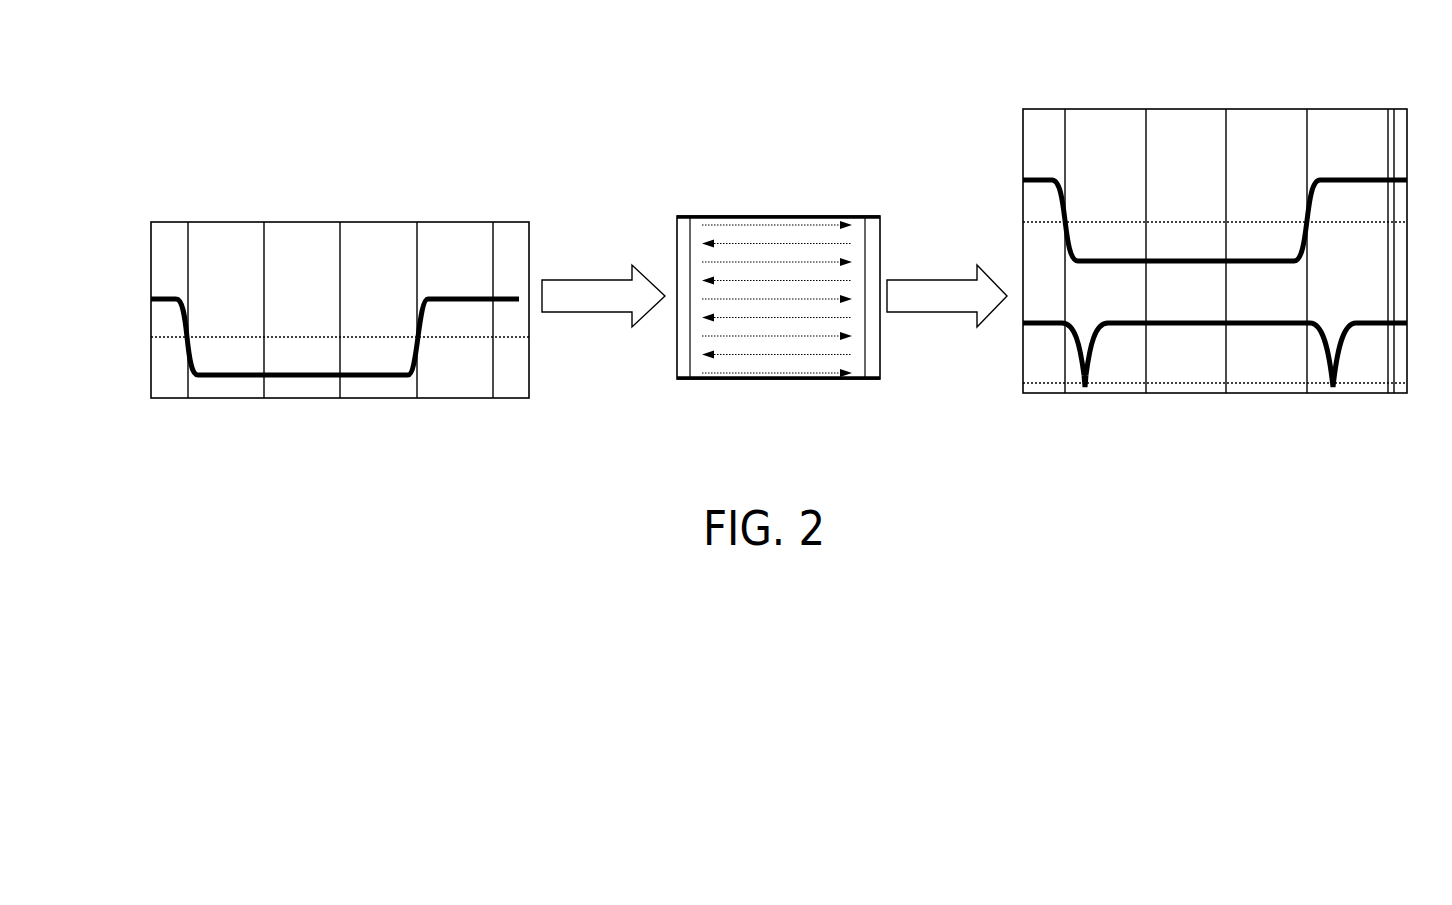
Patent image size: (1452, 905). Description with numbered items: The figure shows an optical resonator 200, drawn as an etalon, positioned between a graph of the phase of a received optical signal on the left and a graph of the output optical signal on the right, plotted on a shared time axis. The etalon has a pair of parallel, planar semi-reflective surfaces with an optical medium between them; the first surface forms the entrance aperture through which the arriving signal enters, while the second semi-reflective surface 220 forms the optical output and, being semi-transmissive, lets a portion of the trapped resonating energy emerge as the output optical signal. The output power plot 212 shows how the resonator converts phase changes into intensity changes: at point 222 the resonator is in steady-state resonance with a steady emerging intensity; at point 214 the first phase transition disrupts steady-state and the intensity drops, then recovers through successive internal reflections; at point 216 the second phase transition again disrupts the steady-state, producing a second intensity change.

The optical resonator 200 is at (832, 198).
The output power plot 212 is at (1029, 329).
The point 214 is at (1070, 361).
The point 216 is at (1322, 360).
The second semi-reflective surface 220 is at (861, 229).
The point 222 is at (1049, 329).